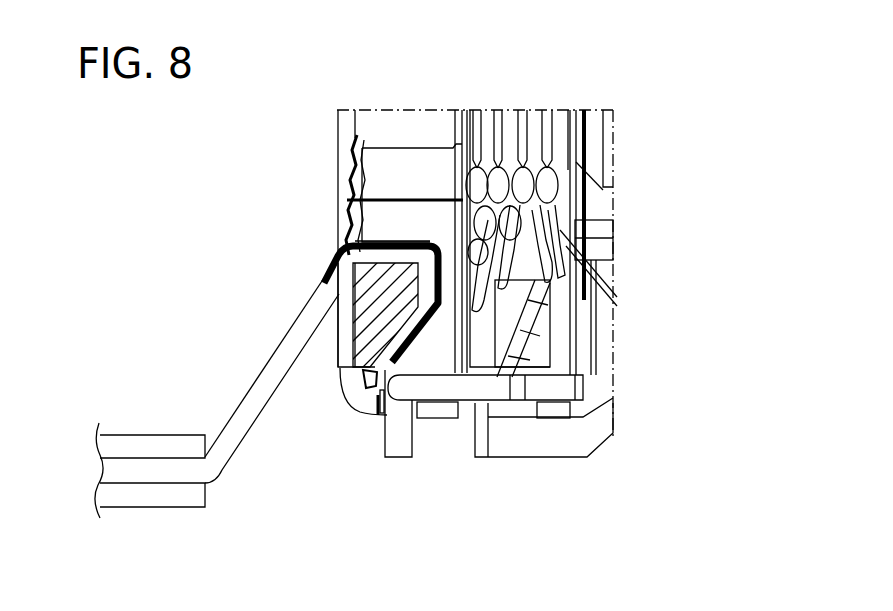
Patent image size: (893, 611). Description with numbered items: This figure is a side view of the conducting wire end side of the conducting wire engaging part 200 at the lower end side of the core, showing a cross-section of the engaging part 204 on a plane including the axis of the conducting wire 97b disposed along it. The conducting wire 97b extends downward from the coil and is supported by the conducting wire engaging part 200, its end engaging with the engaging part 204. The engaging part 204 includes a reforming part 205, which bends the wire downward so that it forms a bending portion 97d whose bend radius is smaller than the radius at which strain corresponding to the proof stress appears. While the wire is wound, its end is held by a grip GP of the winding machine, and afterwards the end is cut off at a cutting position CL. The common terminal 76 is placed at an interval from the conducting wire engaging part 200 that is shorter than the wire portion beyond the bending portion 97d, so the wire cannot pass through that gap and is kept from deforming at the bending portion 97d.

The bending portion 97d is at (428, 243).
The cutting position CL is at (328, 290).
The engaging part 204 is at (363, 298).
The conducting wire engaging part 200 is at (338, 357).
The grip GP is at (118, 445).
The reforming part 205 is at (363, 380).
The conducting wire 97b is at (382, 372).
The common terminal 76 is at (470, 388).